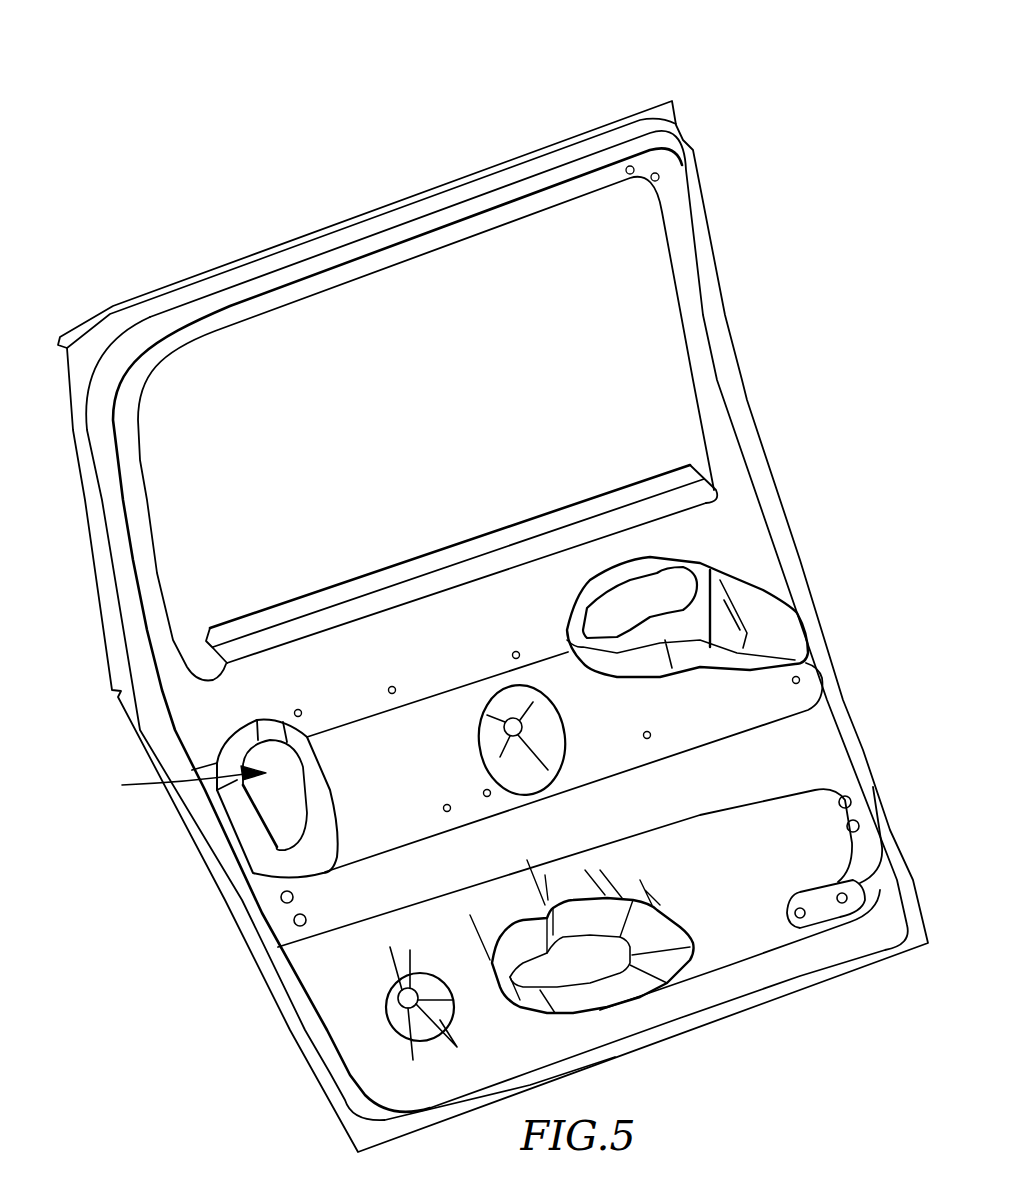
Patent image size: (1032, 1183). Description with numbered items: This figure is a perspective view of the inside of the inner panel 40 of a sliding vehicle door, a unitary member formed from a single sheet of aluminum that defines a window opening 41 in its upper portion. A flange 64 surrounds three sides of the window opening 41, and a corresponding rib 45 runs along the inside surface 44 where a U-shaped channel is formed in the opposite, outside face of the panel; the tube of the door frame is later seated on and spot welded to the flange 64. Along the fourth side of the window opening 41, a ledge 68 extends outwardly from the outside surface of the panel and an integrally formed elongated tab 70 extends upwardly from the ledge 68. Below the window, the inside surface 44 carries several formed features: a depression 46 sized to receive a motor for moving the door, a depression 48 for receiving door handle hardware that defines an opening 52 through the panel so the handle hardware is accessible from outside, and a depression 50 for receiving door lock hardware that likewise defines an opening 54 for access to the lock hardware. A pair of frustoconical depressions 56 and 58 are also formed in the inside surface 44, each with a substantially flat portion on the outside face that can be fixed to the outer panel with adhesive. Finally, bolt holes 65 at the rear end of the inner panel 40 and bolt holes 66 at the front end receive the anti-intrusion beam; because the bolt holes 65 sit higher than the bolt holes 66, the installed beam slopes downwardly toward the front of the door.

The inner panel 40 is at (733, 96).
The window opening 41 is at (648, 322).
The inside surface 44 is at (416, 647).
The rib 45 is at (103, 510).
The depression 46 is at (667, 927).
The depression 48 is at (773, 617).
The depression 50 is at (253, 823).
The opening 52 is at (672, 578).
The opening 54 is at (179, 783).
The depression 56 is at (385, 1007).
The depression 58 is at (567, 732).
The flange 64 is at (147, 493).
The bolt holes 65 is at (294, 921).
The bolt holes 66 is at (859, 826).
The ledge 68 is at (288, 633).
The elongated tab 70 is at (215, 622).